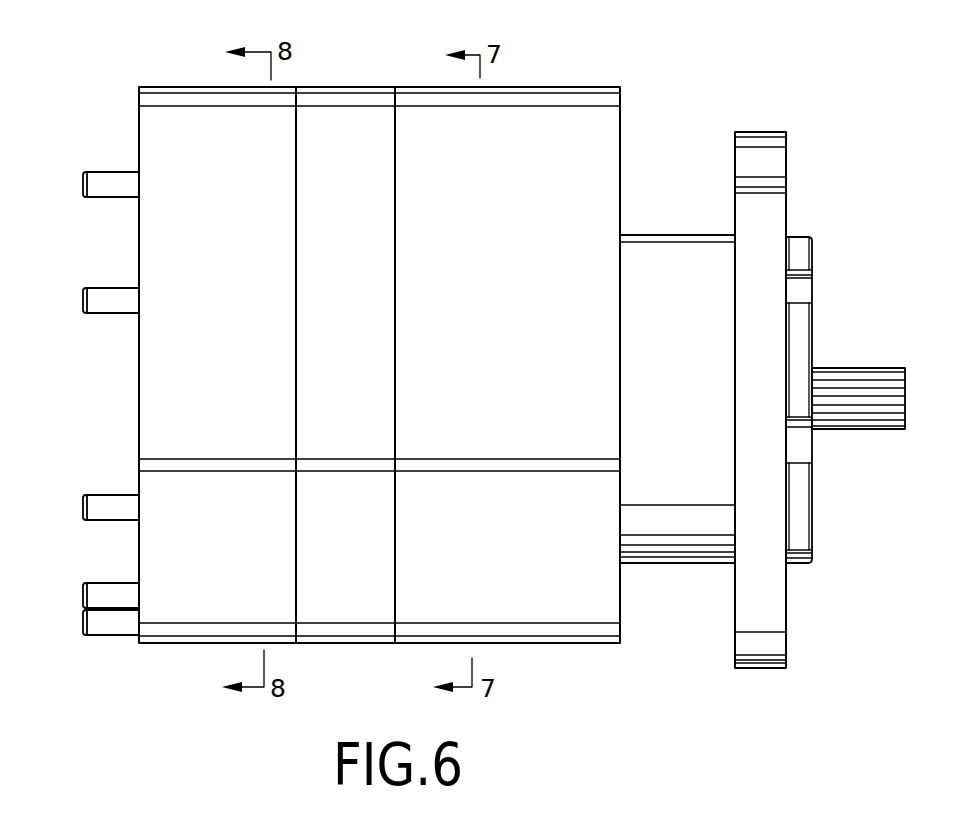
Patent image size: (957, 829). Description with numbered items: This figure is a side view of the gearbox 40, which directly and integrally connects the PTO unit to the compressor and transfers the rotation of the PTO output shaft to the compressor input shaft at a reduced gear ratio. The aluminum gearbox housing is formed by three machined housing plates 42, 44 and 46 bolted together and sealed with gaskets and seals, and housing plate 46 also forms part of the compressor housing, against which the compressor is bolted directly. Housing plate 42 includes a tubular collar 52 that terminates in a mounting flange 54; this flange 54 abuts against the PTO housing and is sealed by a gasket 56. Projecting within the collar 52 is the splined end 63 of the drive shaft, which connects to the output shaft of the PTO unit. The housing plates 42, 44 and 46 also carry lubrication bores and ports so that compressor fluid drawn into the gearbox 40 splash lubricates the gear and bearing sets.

The gearbox 40 is at (510, 353).
The housing plate 42 is at (548, 88).
The housing plate 44 is at (350, 88).
The housing plate 46 is at (178, 87).
The tubular collar 52 is at (660, 270).
The mounting flange 54 is at (773, 165).
The gasket 56 is at (812, 252).
The splined end 63 is at (858, 368).